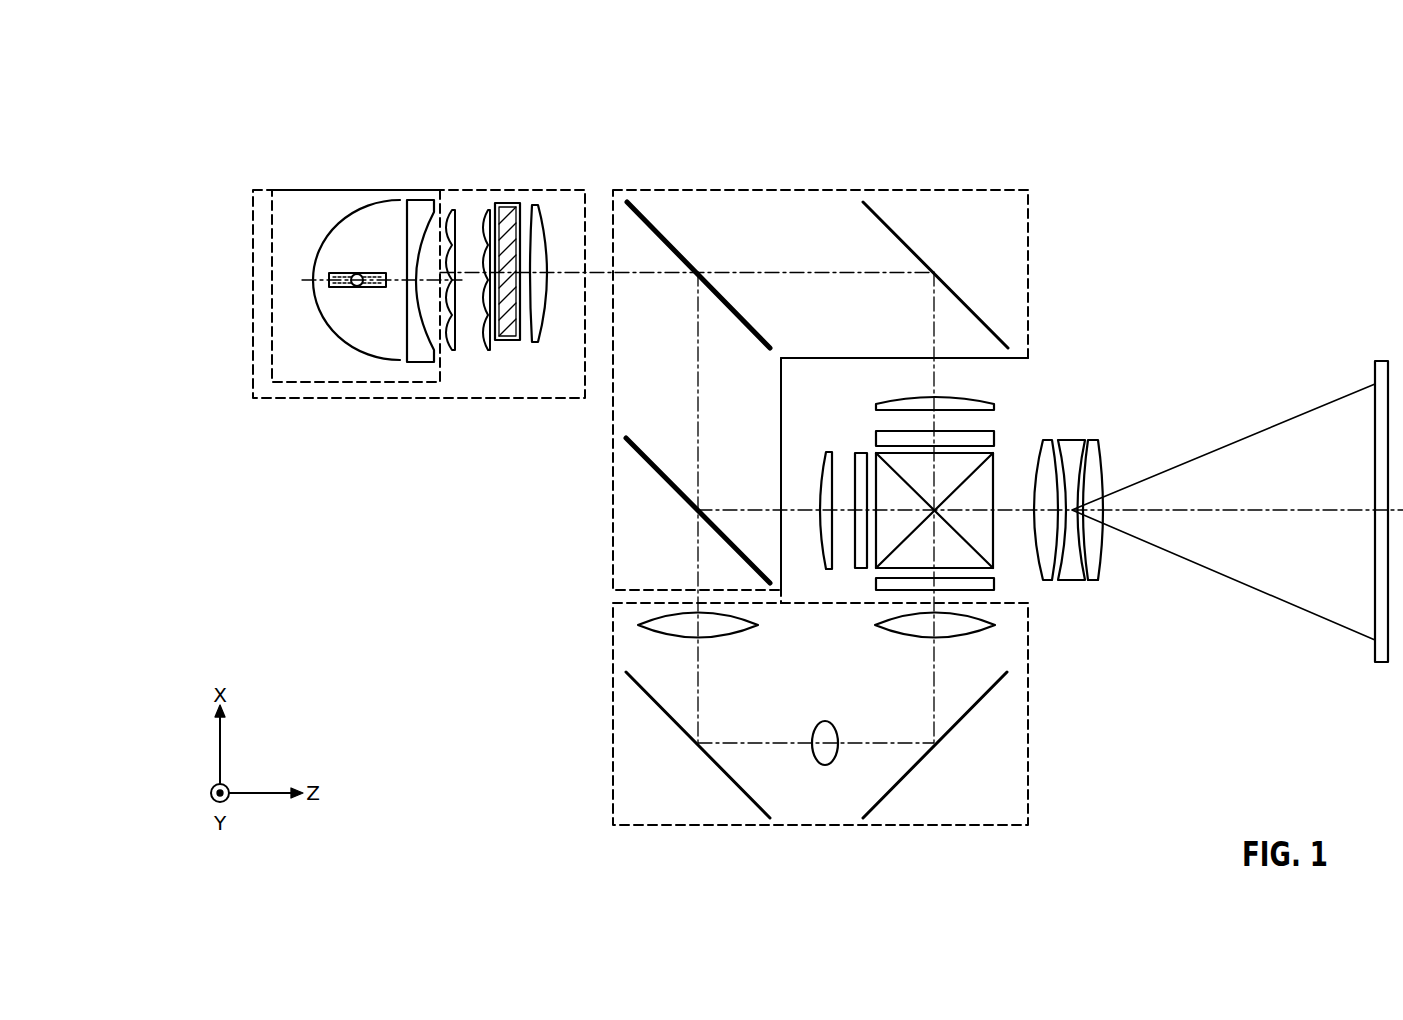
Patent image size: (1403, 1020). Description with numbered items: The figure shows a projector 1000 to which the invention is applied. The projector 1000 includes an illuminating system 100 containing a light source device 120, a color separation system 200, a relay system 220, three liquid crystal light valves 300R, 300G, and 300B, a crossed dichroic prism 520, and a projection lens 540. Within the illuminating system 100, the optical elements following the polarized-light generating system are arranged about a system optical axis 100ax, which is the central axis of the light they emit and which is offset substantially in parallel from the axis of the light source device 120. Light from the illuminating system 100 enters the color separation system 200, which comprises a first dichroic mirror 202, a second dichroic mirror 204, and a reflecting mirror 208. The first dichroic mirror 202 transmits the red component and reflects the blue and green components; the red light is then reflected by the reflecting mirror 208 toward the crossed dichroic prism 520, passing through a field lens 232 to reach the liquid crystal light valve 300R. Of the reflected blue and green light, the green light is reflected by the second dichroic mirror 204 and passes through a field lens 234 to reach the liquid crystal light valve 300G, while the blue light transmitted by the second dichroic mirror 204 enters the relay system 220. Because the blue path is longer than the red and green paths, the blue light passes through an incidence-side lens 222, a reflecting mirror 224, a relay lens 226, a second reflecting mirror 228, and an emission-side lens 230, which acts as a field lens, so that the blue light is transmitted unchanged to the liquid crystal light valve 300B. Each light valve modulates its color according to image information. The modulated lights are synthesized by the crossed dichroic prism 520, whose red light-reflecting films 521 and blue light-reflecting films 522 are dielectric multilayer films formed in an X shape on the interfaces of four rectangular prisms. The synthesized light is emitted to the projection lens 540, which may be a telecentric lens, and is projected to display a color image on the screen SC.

The projector 1000 is at (258, 114).
The illuminating system 100 is at (345, 188).
The light source device 120 is at (357, 382).
The system optical axis 100ax is at (568, 276).
The color separation system 200 is at (682, 188).
The first dichroic mirror 202 is at (653, 224).
The second dichroic mirror 204 is at (653, 470).
The reflecting mirror 208 is at (895, 230).
The relay system 220 is at (613, 627).
The incidence-side lens 222 is at (760, 623).
The reflecting mirror 224 is at (710, 758).
The relay lens 226 is at (817, 727).
The reflecting mirror 228 is at (950, 727).
The emission-side lens 230 is at (877, 634).
The field lens 232 is at (948, 395).
The field lens 234 is at (830, 450).
The liquid crystal light valve 300R is at (876, 438).
The liquid crystal light valve 300G is at (857, 450).
The liquid crystal light valve 300B is at (876, 583).
The crossed dichroic prism 520 is at (998, 450).
The red light-reflecting film 521 is at (978, 548).
The blue light-reflecting film 522 is at (978, 476).
The projection lens 540 is at (1072, 440).
The screen SC is at (1380, 360).